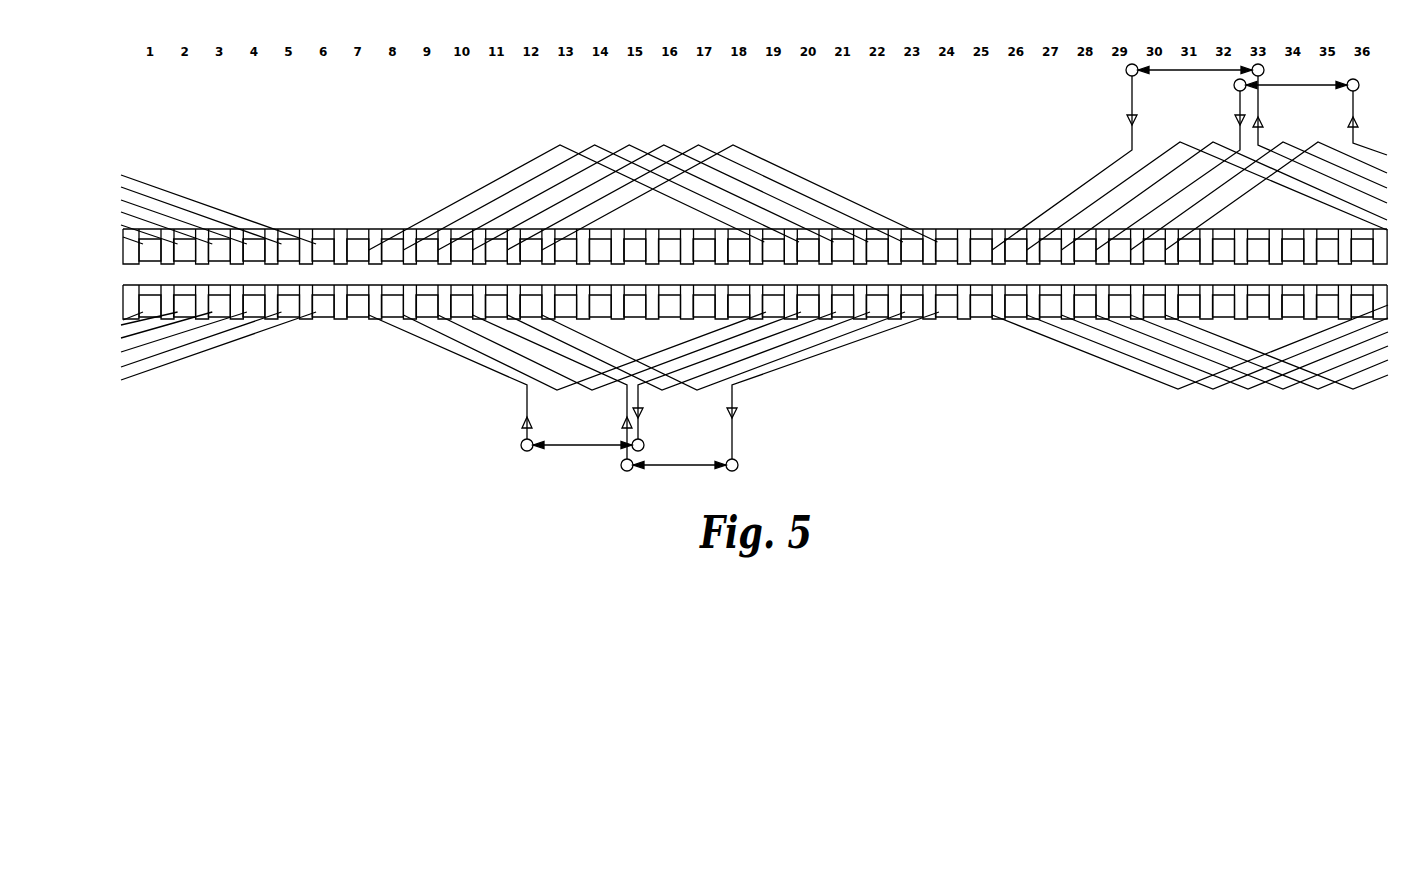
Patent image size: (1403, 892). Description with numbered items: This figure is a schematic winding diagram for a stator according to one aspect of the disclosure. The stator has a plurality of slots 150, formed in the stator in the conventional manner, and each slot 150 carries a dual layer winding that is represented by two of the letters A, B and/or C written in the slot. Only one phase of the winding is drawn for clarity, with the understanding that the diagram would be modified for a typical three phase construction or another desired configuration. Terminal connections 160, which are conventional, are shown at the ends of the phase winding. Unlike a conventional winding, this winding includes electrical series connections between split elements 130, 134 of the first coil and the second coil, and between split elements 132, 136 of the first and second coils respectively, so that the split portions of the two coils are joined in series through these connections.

The split element 130 is at (578, 447).
The split element 132 is at (680, 468).
The split element 134 is at (1297, 90).
The split element 136 is at (1197, 72).
The slot 150 is at (357, 238).
The terminal connection 160 is at (536, 450).